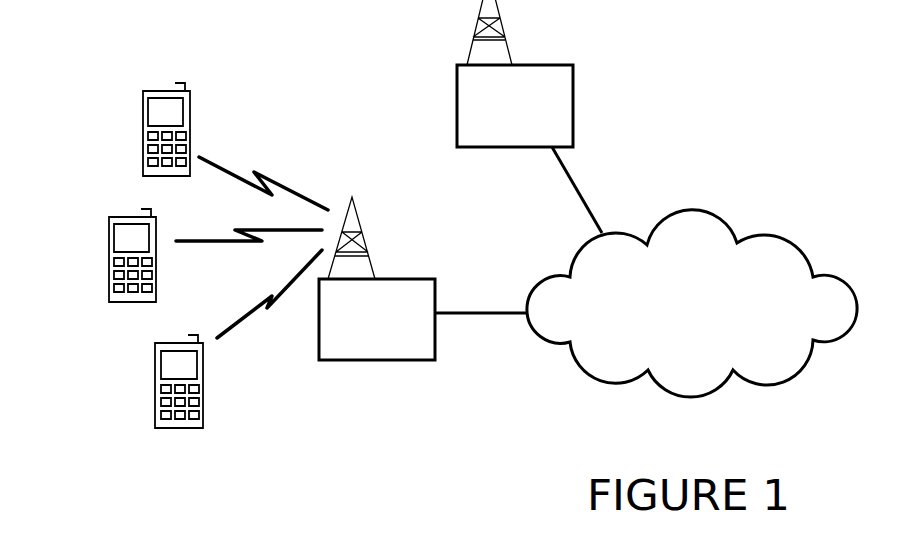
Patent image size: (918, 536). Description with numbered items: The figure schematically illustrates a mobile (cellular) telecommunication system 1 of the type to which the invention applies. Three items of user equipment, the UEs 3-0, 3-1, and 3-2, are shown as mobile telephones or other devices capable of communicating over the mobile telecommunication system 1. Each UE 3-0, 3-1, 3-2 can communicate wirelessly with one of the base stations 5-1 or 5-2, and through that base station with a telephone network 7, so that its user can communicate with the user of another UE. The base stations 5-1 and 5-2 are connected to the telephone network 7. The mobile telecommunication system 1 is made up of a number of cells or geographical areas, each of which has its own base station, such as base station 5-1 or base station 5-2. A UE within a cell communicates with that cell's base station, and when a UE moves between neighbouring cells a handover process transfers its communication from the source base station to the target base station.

The mobile telecommunication system 1 is at (363, 463).
The UE 3-0 is at (143, 170).
The UE 3-1 is at (109, 292).
The UE 3-2 is at (155, 417).
The base station 5-1 is at (413, 279).
The base station 5-2 is at (573, 70).
The telephone network 7 is at (723, 217).